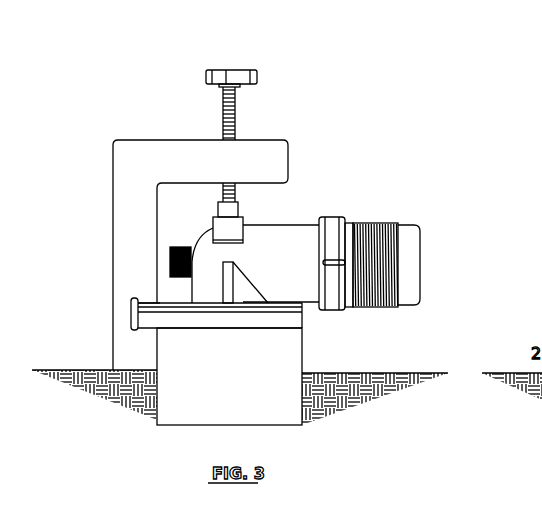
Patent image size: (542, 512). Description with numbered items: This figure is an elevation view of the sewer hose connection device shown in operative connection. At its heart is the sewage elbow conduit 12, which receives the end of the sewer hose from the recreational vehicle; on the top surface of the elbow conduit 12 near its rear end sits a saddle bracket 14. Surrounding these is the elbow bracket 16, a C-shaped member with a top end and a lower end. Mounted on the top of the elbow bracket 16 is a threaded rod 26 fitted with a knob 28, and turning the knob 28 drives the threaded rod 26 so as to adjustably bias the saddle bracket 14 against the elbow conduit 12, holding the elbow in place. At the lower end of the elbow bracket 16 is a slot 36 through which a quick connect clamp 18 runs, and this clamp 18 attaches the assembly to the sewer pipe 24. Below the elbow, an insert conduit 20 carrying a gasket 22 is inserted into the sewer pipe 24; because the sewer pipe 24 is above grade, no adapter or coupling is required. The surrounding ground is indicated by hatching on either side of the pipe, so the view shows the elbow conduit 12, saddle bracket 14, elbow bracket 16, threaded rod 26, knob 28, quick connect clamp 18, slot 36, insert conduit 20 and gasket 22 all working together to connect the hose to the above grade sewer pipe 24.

The sewage elbow conduit 12 is at (412, 216).
The saddle bracket 14 is at (254, 217).
The elbow bracket 16 is at (140, 132).
The quick connect clamp 18 is at (317, 331).
The insert conduit 20 is at (317, 313).
The gasket 22 is at (143, 299).
The sewer pipe 24 is at (156, 352).
The threaded rod 26 is at (248, 117).
The knob 28 is at (243, 59).
The slot 36 is at (130, 308).